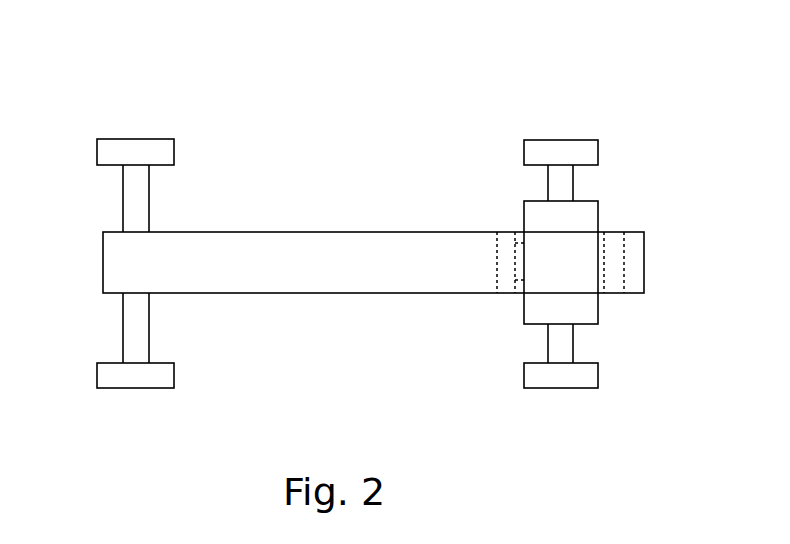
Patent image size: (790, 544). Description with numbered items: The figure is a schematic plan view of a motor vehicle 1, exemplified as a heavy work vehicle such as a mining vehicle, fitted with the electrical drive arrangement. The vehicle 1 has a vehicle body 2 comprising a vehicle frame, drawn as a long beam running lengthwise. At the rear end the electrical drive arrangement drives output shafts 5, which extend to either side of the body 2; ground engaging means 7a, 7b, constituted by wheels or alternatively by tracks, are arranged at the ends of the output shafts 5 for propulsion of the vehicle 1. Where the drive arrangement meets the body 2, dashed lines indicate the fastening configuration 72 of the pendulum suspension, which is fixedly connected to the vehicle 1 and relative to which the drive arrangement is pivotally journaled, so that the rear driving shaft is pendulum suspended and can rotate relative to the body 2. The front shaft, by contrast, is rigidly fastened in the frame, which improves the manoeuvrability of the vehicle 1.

The motor vehicle 1 is at (389, 216).
The vehicle body 2 is at (325, 230).
The output shaft 5 is at (548, 182).
The ground engaging means 7a is at (577, 105).
The ground engaging means 7b is at (563, 388).
The fastening configuration 72 is at (505, 228).